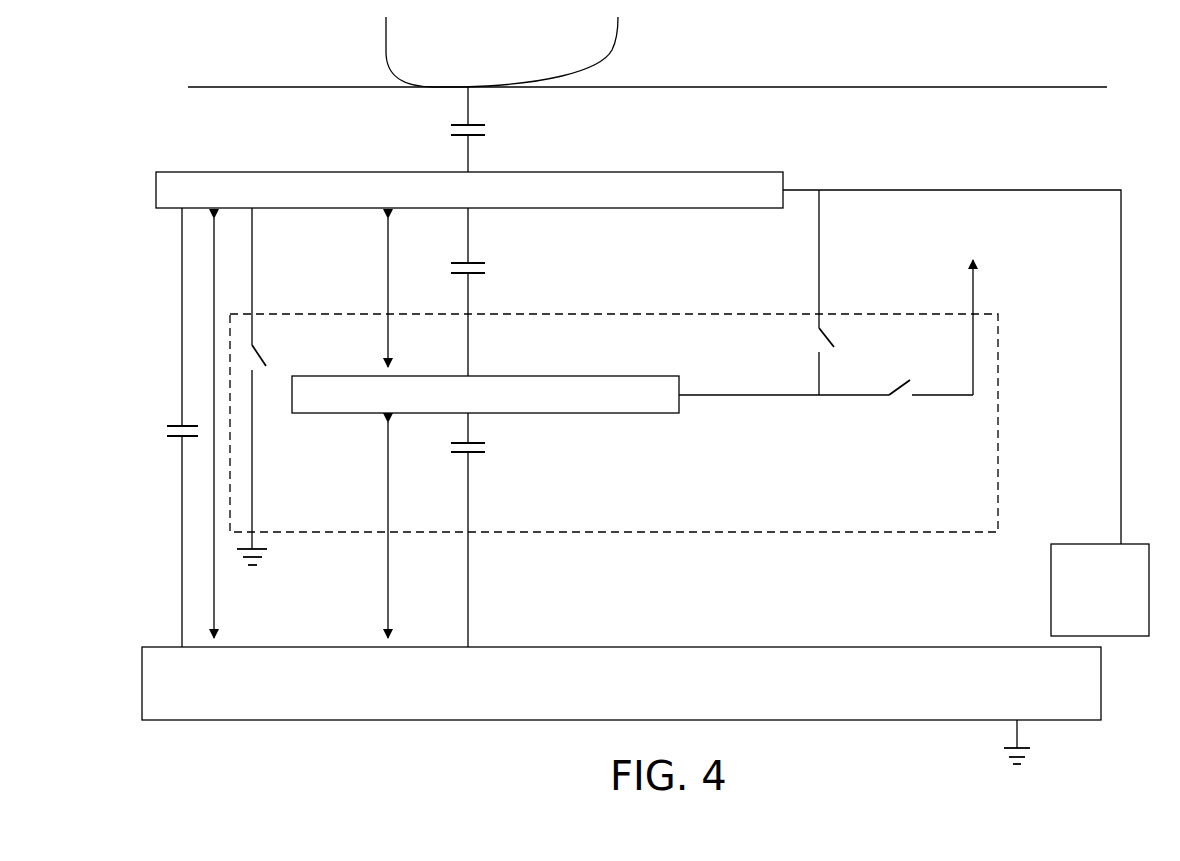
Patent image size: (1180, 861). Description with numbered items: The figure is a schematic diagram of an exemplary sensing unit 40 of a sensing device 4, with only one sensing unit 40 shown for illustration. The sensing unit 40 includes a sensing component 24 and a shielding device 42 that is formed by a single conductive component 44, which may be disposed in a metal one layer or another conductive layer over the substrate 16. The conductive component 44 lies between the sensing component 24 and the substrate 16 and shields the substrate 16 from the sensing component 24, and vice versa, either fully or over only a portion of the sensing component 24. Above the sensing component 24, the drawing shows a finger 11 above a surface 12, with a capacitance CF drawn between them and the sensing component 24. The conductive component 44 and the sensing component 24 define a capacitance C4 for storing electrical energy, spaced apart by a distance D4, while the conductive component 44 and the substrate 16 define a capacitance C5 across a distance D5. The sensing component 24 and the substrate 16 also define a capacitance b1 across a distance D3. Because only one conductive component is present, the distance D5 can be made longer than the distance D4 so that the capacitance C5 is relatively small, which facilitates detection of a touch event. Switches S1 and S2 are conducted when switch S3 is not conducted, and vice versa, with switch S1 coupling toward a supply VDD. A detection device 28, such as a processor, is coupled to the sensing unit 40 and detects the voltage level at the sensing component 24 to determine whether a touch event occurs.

The sensing device 4 is at (103, 47).
The finger 11 is at (620, 38).
The cover layer surface 12 is at (860, 87).
The finger capacitance CF is at (488, 130).
The sensing component 24 is at (769, 201).
The sensing unit 40 is at (315, 297).
The shielding device 42 is at (1000, 366).
The conductive component 44 is at (653, 406).
The capacitance C4 is at (488, 268).
The capacitance C5 is at (488, 447).
The capacitance b1 is at (165, 431).
The switch S1 is at (896, 385).
The switch S2 is at (268, 353).
The switch S3 is at (815, 340).
The supply voltage VDD is at (973, 312).
The distance D3 is at (232, 428).
The distance D4 is at (372, 292).
The distance D5 is at (371, 530).
The substrate 16 is at (1085, 707).
The detection device 28 is at (1051, 583).